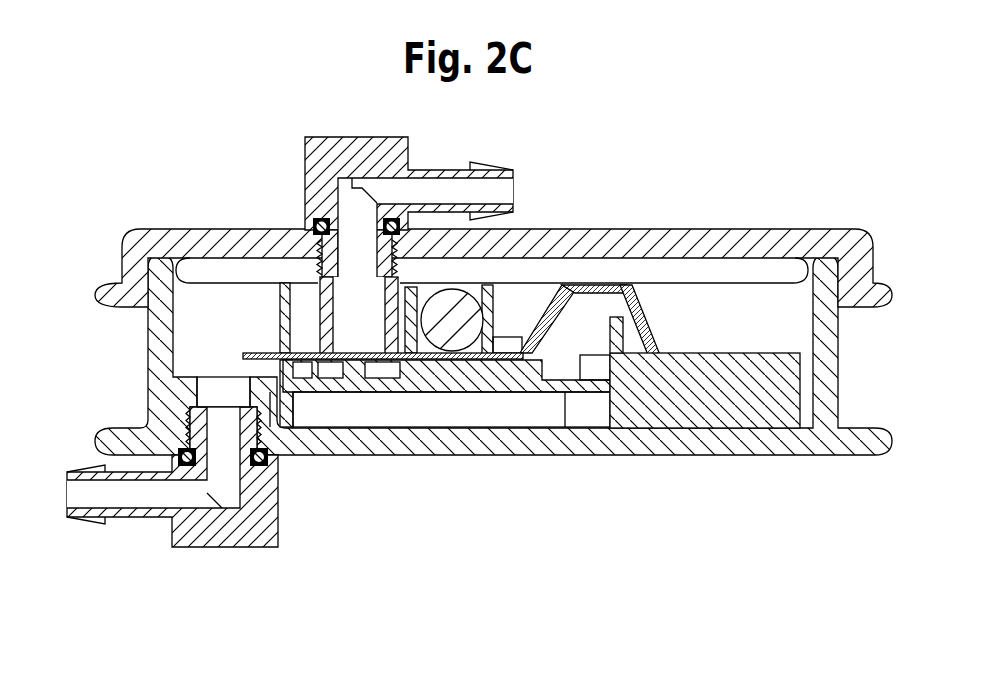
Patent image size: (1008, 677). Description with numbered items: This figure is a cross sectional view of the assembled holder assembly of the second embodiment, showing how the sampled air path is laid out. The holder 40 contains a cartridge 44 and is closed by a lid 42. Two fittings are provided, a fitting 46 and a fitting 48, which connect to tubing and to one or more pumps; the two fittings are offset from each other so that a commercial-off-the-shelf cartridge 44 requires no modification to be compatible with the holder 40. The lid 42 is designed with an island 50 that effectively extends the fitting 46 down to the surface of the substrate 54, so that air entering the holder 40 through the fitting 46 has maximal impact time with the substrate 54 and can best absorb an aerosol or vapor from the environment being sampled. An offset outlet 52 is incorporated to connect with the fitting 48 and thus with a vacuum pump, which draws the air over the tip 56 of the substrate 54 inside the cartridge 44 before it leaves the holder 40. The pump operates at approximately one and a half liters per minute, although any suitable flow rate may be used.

The holder 40 is at (832, 437).
The lid 42 is at (848, 238).
The cartridge 44 is at (718, 366).
The fitting 46 is at (330, 142).
The fitting 48 is at (152, 515).
The island 50 is at (388, 332).
The offset outlet 52 is at (187, 401).
The substrate 54 is at (470, 366).
The tip 56 is at (251, 345).